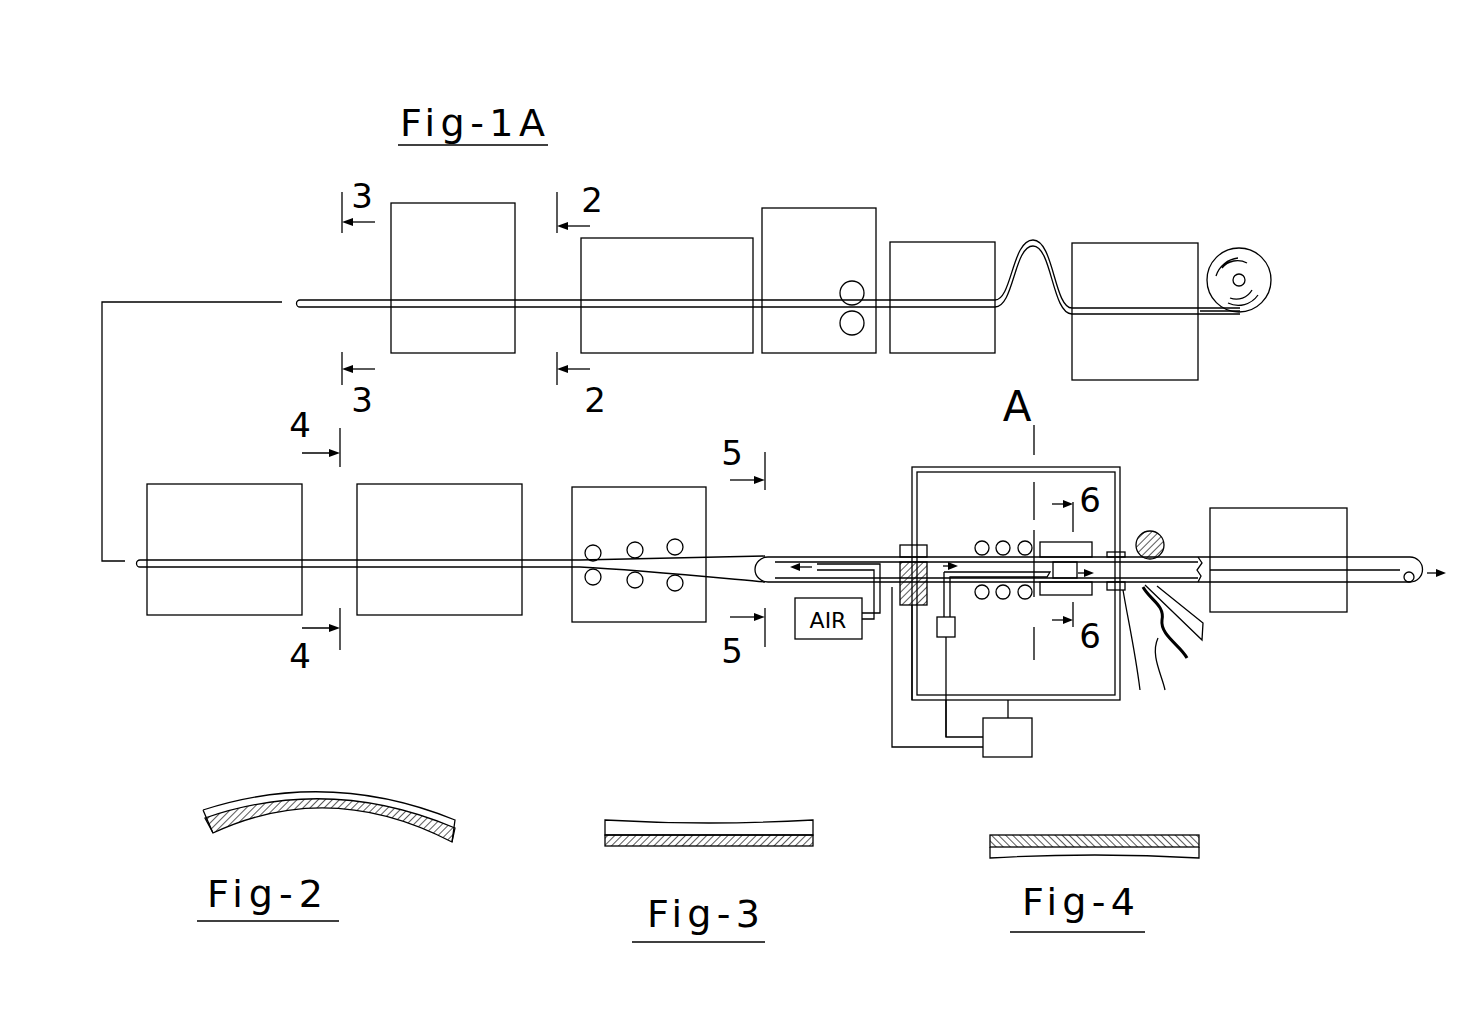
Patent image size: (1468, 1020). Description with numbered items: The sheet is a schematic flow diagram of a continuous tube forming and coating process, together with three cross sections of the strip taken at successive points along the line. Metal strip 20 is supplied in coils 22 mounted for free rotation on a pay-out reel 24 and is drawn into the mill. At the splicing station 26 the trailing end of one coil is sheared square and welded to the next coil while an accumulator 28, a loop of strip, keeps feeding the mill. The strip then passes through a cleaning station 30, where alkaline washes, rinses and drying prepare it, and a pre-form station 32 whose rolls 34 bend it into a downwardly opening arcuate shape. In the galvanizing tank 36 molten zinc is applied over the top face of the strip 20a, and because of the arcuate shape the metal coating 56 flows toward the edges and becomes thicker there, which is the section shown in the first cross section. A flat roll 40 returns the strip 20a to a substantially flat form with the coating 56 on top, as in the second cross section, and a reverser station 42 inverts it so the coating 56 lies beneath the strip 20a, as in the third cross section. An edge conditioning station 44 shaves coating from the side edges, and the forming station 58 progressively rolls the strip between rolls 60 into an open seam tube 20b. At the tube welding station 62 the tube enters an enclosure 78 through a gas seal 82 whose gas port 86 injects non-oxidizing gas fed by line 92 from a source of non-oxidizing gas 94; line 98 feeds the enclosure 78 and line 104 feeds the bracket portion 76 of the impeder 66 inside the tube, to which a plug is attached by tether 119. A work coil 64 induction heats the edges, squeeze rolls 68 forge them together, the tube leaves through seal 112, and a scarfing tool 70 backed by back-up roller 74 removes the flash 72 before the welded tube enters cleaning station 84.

In FIG. 1A, the metal strip 20 is at (1215, 316).
In FIG. 1A, the metal strip 20a is at (812, 320).
In FIG. 2, the metal strip 20a is at (382, 817).
In FIG. 3, the metal strip 20a is at (663, 847).
In FIG. 4, the metal strip 20a is at (1000, 836).
In FIG. 1A, the open seam tube 20b is at (832, 557).
In FIG. 1A, the coils 22 is at (1255, 311).
In FIG. 1A, the pay-out reel 24 is at (1250, 272).
In FIG. 1A, the splicing station 26 is at (1155, 243).
In FIG. 1A, the accumulator 28 is at (1036, 240).
In FIG. 1A, the cleaning station 30 is at (946, 242).
In FIG. 1A, the pre-form station 32 is at (795, 208).
In FIG. 1A, the rolls 34 is at (848, 335).
In FIG. 1A, the galvanizing tank 36 is at (680, 353).
In FIG. 1A, the flat roll 40 is at (452, 353).
In FIG. 1A, the reverser station 42 is at (225, 484).
In FIG. 1A, the edge conditioning station 44 is at (425, 484).
In FIG. 2, the metal coating 56 is at (420, 806).
In FIG. 3, the metal coating 56 is at (818, 831).
In FIG. 4, the metal coating 56 is at (1197, 859).
In FIG. 1A, the forming station 58 is at (635, 487).
In FIG. 1A, the rolls 60 is at (637, 592).
In FIG. 1A, the tube welding station 62 is at (914, 447).
In FIG. 1A, the work coil 64 is at (997, 541).
In FIG. 1A, the impeder 66 is at (965, 598).
In FIG. 1A, the squeeze rolls 68 is at (1045, 600).
In FIG. 1A, the scarfing tool 70 is at (1205, 627).
In FIG. 1A, the flash 72 is at (1179, 641).
In FIG. 1A, the back-up roller 74 is at (1150, 531).
In FIG. 1A, the bracket portion 76 is at (946, 652).
In FIG. 1A, the enclosure 78 is at (1036, 702).
In FIG. 1A, the gas seal 82 is at (888, 536).
In FIG. 1A, the cleaning station 84 is at (1285, 508).
In FIG. 1A, the gas port 86 is at (926, 547).
In FIG. 1A, the line 92 is at (892, 648).
In FIG. 1A, the source of non-oxidizing gas 94 is at (1007, 737).
In FIG. 1A, the line 98 is at (944, 735).
In FIG. 1A, the line 104 is at (912, 686).
In FIG. 1A, the seal 112 is at (1150, 666).
In FIG. 1A, the tether 119 is at (1277, 573).